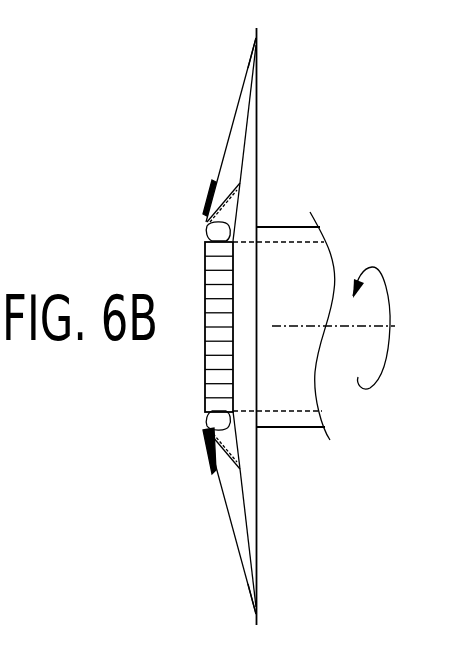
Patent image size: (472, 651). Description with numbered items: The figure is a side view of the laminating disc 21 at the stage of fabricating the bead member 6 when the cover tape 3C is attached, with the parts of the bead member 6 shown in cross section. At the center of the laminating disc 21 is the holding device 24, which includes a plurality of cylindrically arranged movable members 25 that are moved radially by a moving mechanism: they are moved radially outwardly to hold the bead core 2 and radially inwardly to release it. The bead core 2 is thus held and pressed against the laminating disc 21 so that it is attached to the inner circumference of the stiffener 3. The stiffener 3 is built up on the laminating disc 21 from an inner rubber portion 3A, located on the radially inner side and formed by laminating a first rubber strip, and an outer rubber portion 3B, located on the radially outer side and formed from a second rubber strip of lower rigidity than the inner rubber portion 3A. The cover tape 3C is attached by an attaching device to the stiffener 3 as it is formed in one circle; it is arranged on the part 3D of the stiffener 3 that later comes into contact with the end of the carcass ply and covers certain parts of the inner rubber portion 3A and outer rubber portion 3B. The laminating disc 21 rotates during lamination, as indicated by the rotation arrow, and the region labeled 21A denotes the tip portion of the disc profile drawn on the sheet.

The bead core 2 is at (208, 233).
The stiffener 3 is at (232, 160).
The inner rubber portion 3A is at (230, 460).
The outer rubber portion 3B is at (232, 493).
The cover tape 3C is at (208, 200).
The part of the stiffener 3D is at (230, 198).
The bead member 6 is at (202, 455).
The laminating disc 21 is at (254, 553).
The arm tip upper 21A is at (254, 56).
The holding device 24 is at (207, 292).
The movable members 25 is at (212, 357).